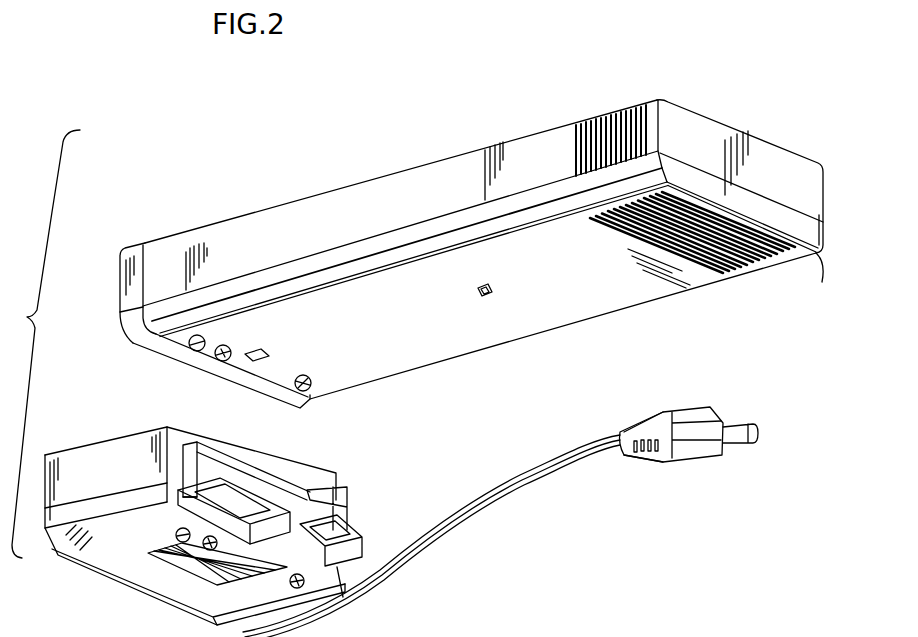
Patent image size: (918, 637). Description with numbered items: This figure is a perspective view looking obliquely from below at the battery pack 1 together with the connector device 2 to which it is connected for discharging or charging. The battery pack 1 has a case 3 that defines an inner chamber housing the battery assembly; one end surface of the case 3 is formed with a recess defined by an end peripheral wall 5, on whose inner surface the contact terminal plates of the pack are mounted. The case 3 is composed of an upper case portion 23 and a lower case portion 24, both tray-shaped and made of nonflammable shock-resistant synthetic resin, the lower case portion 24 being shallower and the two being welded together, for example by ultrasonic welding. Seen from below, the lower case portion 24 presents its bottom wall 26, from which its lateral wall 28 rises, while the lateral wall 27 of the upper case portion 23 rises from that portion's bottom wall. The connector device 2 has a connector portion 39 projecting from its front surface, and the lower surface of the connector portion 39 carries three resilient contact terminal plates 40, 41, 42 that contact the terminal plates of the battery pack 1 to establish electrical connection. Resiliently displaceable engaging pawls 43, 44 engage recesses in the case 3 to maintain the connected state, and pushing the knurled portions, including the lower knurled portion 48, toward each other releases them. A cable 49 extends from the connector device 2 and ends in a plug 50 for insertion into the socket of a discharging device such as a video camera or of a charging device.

The battery pack 1 is at (554, 118).
The connector device 2 is at (56, 559).
The case 3 is at (430, 164).
The end peripheral wall 5 is at (118, 270).
The upper case portion 23 is at (173, 237).
The lower case portion 24 is at (588, 322).
The bottom wall 26 is at (398, 366).
The lateral wall 27 is at (328, 205).
The lateral wall 28 is at (825, 255).
The connector portion 39 is at (357, 535).
The contact terminal plate 40 is at (343, 597).
The contact terminal plate 41 is at (310, 482).
The contact terminal plate 42 is at (213, 520).
The engaging pawl 43 is at (273, 473).
The engaging pawl 44 is at (300, 577).
The lower knurled portion 48 is at (203, 570).
The cable 49 is at (548, 468).
The plug 50 is at (692, 462).